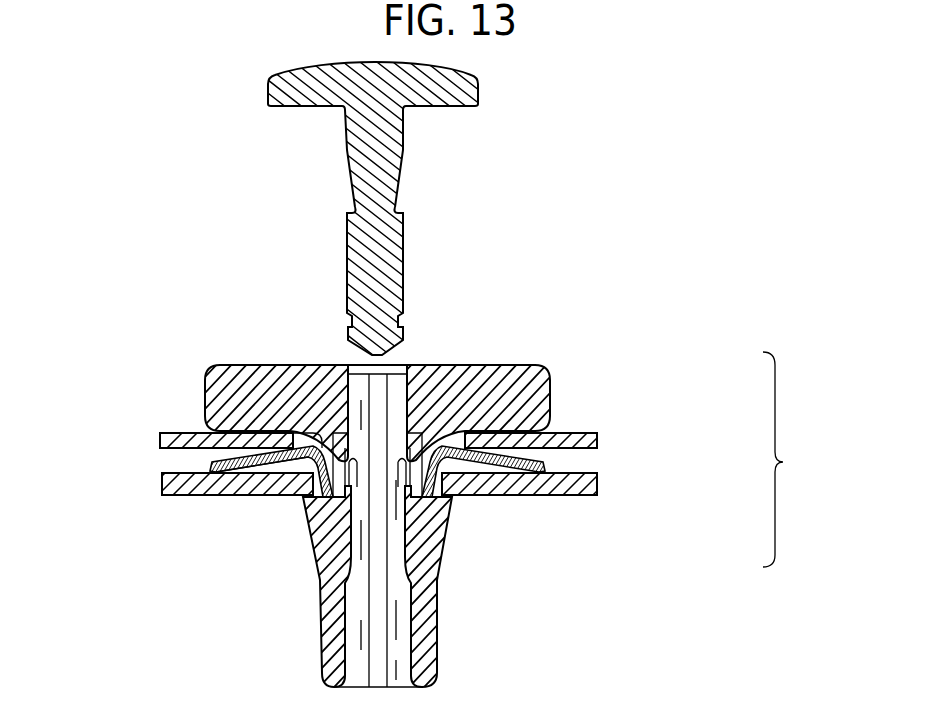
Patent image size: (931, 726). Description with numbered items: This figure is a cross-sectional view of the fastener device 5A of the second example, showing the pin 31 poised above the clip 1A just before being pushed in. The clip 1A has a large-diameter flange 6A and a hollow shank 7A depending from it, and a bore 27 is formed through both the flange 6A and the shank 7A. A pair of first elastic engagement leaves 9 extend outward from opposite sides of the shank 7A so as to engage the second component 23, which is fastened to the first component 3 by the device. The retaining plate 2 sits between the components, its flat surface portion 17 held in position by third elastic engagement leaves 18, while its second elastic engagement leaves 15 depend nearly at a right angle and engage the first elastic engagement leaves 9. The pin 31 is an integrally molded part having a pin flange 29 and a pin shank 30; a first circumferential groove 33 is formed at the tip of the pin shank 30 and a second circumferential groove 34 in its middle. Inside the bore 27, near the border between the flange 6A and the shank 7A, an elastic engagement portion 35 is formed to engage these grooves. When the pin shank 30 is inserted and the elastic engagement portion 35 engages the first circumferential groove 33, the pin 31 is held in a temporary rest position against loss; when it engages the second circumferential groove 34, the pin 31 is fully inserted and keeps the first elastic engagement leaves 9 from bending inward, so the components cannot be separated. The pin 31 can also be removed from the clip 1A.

The clip 1A is at (463, 492).
The retaining plate 2 is at (547, 457).
The first component 3 is at (165, 433).
The fastener device 5A is at (790, 459).
The flange 6A is at (550, 376).
The shank 7A is at (323, 640).
The first elastic engagement leaves 9 is at (307, 533).
The second elastic engagement leaves 15 is at (303, 497).
The flat surface portion 17 is at (250, 497).
The third elastic engagement leaves 18 is at (210, 466).
The second component 23 is at (172, 483).
The bore 27 is at (400, 395).
The pin flange 29 is at (282, 90).
The pin shank 30 is at (358, 142).
The pin 31 is at (450, 224).
The first circumferential groove 33 is at (336, 292).
The second circumferential groove 34 is at (353, 207).
The elastic engagement portion 35 is at (360, 445).